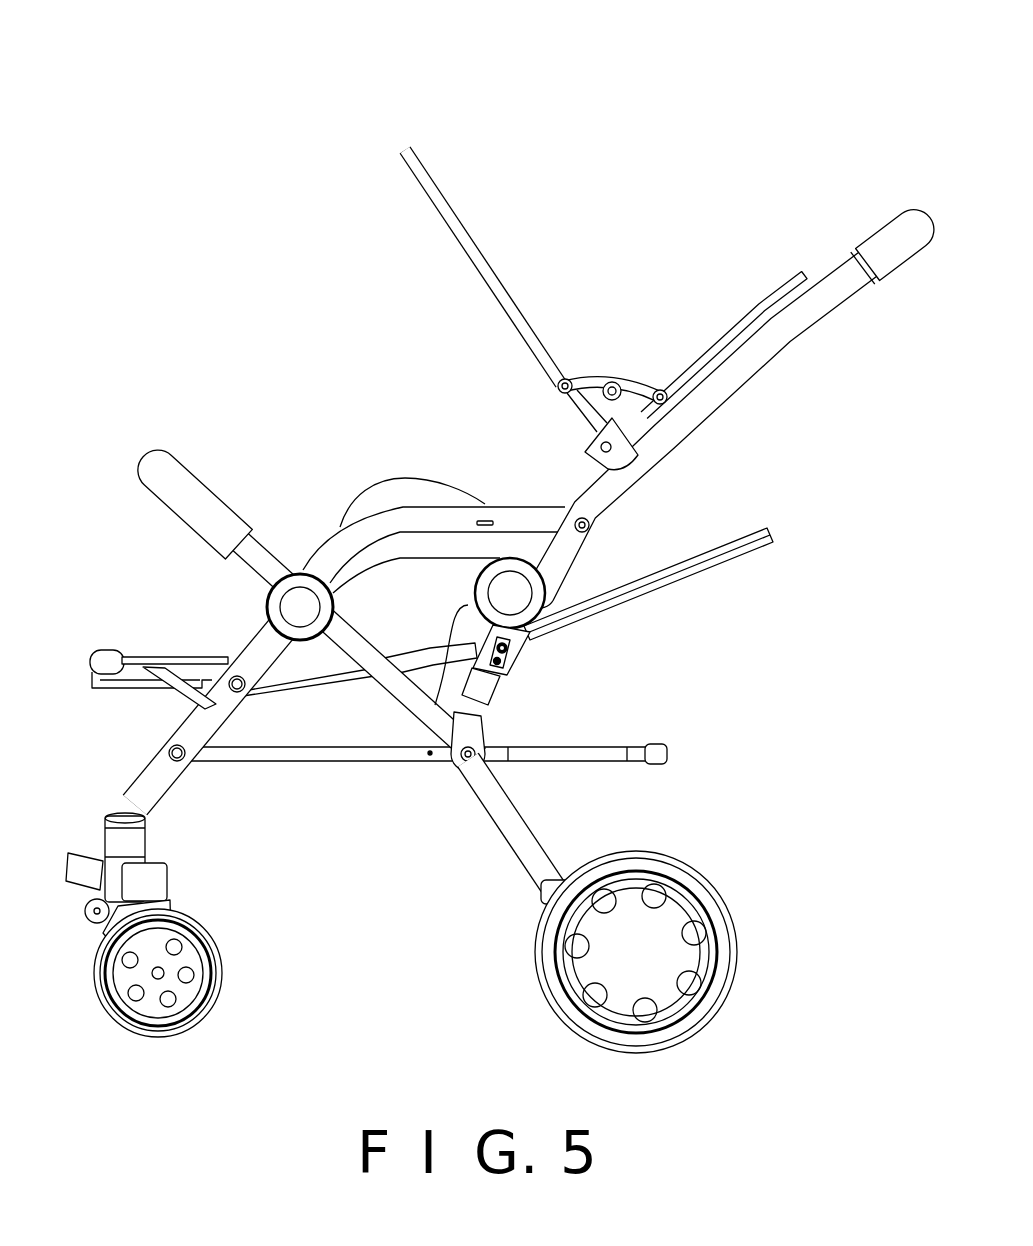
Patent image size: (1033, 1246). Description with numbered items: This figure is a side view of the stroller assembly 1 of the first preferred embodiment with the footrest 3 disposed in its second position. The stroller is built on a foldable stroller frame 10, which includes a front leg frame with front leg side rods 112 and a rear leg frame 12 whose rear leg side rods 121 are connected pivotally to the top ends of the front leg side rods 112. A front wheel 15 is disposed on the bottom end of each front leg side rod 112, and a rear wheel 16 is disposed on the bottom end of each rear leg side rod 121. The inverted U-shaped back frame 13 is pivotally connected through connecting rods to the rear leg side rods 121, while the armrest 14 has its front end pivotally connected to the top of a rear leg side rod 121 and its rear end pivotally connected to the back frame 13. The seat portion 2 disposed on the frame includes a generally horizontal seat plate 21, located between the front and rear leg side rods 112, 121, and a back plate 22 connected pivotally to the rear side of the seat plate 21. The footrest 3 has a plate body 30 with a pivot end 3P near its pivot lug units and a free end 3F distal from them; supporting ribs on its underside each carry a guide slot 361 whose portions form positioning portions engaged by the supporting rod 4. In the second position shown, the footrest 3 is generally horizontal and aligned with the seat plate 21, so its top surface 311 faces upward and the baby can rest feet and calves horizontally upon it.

The stroller assembly 1 is at (723, 138).
The foldable stroller frame 10 is at (830, 228).
The rear leg frame 12 is at (141, 436).
The back frame 13 is at (780, 330).
The armrest 14 is at (458, 520).
The front wheel 15 is at (213, 978).
The rear wheel 16 is at (706, 1002).
The front leg side rod 112 is at (160, 788).
The rear leg side rod 121 is at (530, 824).
The seat portion 2 is at (745, 518).
The seat plate 21 is at (300, 680).
The back plate 22 is at (655, 585).
The footrest 3 is at (136, 640).
The plate body 30 is at (161, 658).
The top surface 311 is at (183, 657).
The guide slot 361 is at (130, 690).
The free end 3F is at (94, 655).
The pivot end 3P is at (266, 575).
The supporting rod 4 is at (180, 700).